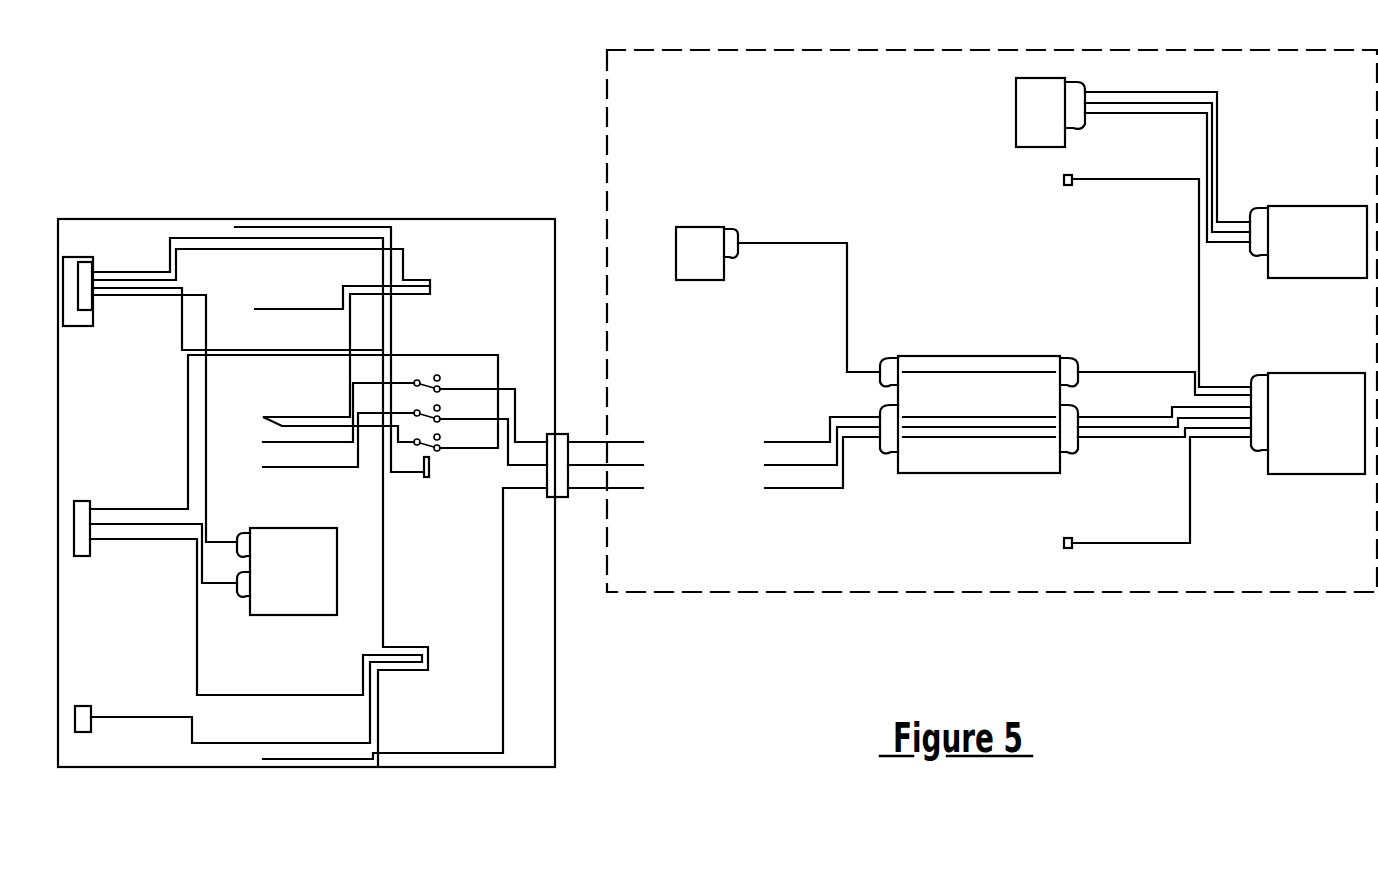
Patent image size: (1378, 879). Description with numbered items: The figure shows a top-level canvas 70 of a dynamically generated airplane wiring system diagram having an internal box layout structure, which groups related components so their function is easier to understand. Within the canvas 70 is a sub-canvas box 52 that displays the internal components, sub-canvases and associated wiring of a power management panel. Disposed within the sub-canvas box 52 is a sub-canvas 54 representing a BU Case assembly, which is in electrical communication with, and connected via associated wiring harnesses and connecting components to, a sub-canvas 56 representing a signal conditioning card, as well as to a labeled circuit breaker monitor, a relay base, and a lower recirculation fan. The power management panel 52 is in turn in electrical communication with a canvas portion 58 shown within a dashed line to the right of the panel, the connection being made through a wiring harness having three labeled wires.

The sub-canvas box 52 is at (422, 219).
The sub-canvas representing a BU Case assembly 54 is at (78, 257).
The sub-canvas representing a signal conditioning card 56 is at (273, 528).
The canvas portion 58 is at (778, 50).
The canvas 70 is at (559, 91).